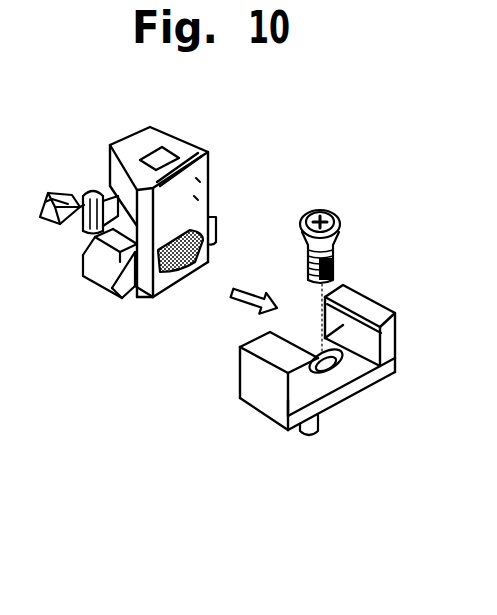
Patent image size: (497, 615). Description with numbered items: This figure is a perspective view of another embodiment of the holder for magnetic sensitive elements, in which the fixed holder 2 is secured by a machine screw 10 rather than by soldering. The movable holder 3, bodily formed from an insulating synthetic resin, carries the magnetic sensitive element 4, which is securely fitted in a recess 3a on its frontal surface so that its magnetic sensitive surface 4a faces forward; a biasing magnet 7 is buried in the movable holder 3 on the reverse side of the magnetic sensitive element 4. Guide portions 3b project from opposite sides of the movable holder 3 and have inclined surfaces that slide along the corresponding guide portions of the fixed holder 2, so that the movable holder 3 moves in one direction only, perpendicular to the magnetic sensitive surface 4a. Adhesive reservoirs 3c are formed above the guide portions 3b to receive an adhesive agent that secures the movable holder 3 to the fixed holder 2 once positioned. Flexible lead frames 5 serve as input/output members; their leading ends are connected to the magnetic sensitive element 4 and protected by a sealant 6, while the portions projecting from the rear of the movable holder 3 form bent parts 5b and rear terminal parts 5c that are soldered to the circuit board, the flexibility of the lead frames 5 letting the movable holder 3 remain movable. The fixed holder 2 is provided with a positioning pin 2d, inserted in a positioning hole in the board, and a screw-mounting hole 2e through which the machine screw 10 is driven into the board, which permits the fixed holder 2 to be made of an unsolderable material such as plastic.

The fixed holder 2 is at (334, 412).
The positioning pin 2d is at (306, 440).
The screw-mounting hole 2e is at (352, 373).
The movable holder 3 is at (143, 130).
The recess 3a is at (160, 178).
The guide portions 3b is at (220, 221).
The adhesive reservoirs 3c is at (108, 287).
The magnetic sensitive element 4 is at (196, 198).
The magnetic sensitive surface 4a is at (198, 180).
The flexible lead frames 5 is at (62, 232).
The bent parts 5b is at (90, 189).
The rear terminal parts 5c is at (72, 195).
The sealant 6 is at (190, 266).
The biasing magnet 7 is at (168, 148).
The machine screw 10 is at (342, 222).